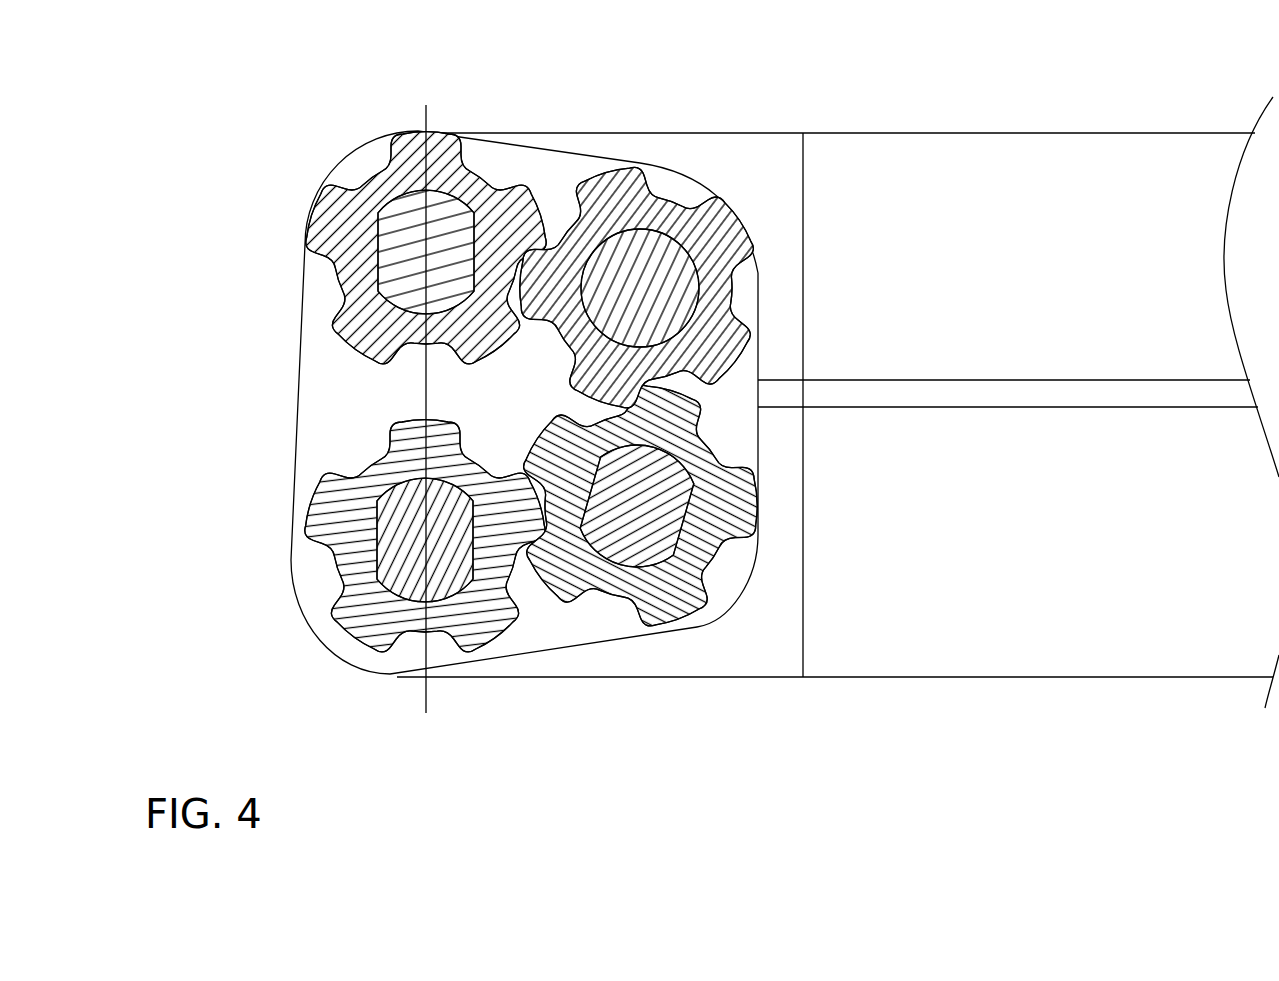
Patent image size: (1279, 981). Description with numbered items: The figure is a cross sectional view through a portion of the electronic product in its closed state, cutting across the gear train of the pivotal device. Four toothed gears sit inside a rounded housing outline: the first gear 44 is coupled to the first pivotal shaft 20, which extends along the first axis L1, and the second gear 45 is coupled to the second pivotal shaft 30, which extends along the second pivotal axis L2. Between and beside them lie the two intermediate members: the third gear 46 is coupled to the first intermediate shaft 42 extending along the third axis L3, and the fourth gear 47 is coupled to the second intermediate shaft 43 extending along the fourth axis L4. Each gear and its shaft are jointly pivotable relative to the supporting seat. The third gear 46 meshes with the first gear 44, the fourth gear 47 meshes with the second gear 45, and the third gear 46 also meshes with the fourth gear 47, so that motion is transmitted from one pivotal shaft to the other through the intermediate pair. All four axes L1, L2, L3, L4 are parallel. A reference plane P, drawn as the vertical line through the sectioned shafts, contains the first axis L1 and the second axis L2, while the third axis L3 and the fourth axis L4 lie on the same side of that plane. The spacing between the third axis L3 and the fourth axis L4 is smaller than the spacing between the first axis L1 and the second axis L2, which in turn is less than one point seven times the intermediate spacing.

The first pivotal shaft 20 is at (485, 203).
The second pivotal shaft 30 is at (468, 622).
The first intermediate shaft 42 is at (611, 200).
The second intermediate shaft 43 is at (668, 598).
The first gear 44 is at (408, 105).
The second gear 45 is at (306, 458).
The third gear 46 is at (753, 205).
The fourth gear 47 is at (735, 590).
The first axis L1 is at (423, 250).
The second pivotal axis L2 is at (425, 540).
The third axis L3 is at (640, 288).
The fourth axis L4 is at (637, 508).
The reference plane P is at (427, 700).